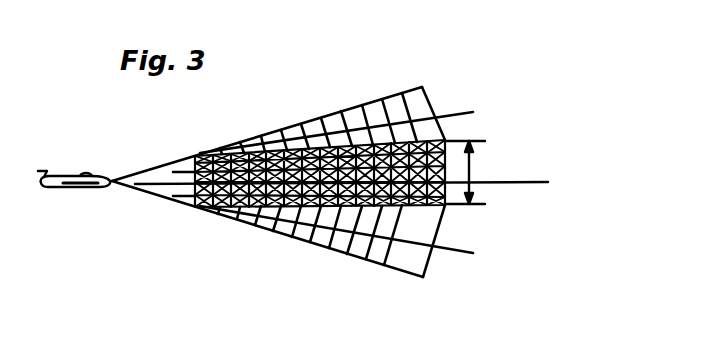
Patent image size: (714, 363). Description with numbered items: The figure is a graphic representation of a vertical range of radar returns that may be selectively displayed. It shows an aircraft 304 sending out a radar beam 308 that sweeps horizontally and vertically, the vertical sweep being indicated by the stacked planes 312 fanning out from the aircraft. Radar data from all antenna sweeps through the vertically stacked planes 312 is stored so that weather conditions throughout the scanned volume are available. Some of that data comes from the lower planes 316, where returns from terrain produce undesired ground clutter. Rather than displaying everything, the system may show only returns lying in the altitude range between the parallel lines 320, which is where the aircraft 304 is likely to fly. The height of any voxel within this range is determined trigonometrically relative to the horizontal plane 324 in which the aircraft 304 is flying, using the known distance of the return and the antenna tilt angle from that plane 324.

The aircraft 304 is at (73, 189).
The radar beam 308 is at (252, 240).
The stacked planes 312 is at (428, 121).
The lower planes 316 is at (440, 233).
The parallel lines 320 is at (486, 204).
The horizontal plane 324 is at (548, 182).